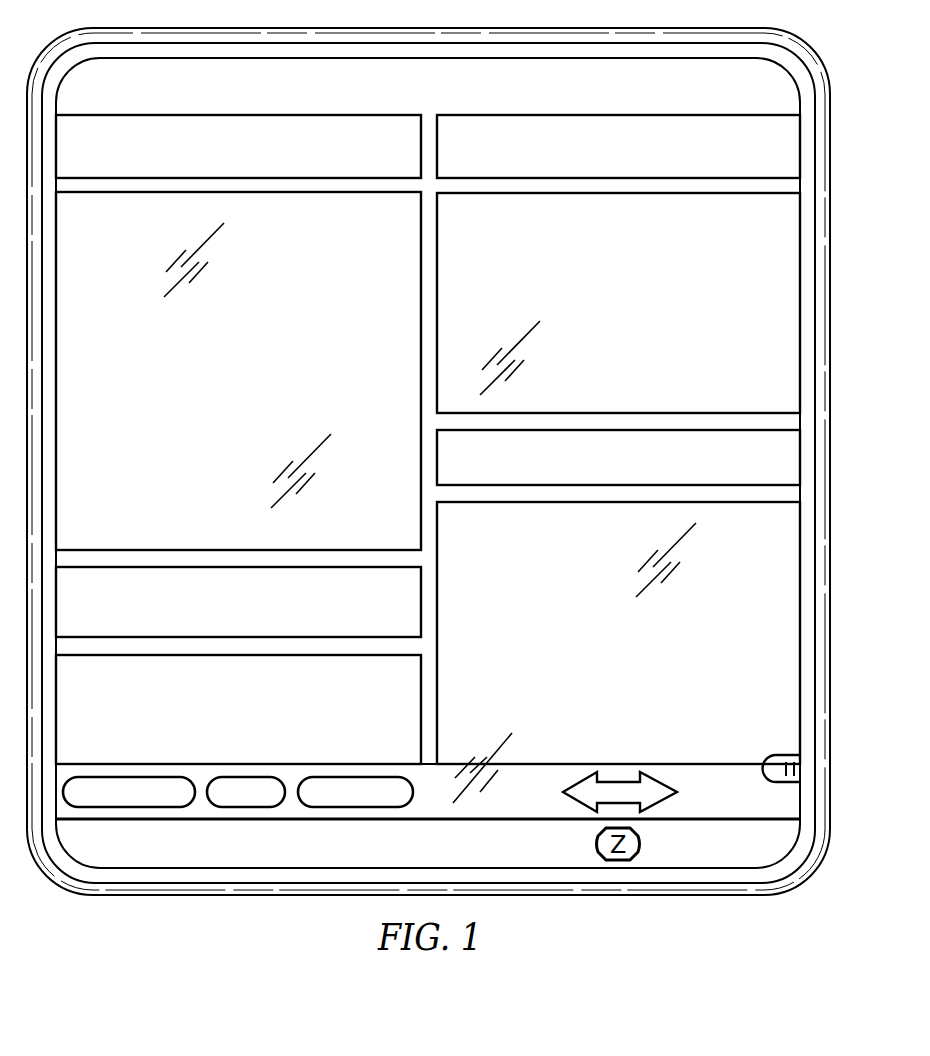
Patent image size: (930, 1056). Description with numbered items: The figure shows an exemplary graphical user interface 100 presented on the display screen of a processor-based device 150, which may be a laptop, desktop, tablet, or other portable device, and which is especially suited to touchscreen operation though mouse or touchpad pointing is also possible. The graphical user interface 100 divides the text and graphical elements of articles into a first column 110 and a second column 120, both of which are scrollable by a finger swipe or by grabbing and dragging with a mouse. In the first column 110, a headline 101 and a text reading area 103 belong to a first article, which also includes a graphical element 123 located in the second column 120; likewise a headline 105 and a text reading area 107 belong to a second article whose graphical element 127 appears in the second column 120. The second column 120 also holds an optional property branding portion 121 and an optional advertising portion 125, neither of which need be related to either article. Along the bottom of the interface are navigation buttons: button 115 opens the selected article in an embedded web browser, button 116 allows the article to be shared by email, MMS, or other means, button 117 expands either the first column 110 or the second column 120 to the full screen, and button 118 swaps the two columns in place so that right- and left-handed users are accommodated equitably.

The graphical user interface 100 is at (428, 463).
The headline 101 is at (238, 146).
The text reading area 103 is at (238, 371).
The headline 105 is at (238, 602).
The text reading area 107 is at (238, 709).
The first column 110 is at (238, 422).
The button 115 is at (132, 808).
The button 116 is at (250, 808).
The button 117 is at (375, 808).
The button 118 is at (677, 790).
The second column 120 is at (618, 422).
The property branding portion 121 is at (618, 146).
The graphical element 123 is at (618, 303).
The advertising portion 125 is at (618, 457).
The graphical element 127 is at (618, 633).
The processor-based device 150 is at (689, 27).